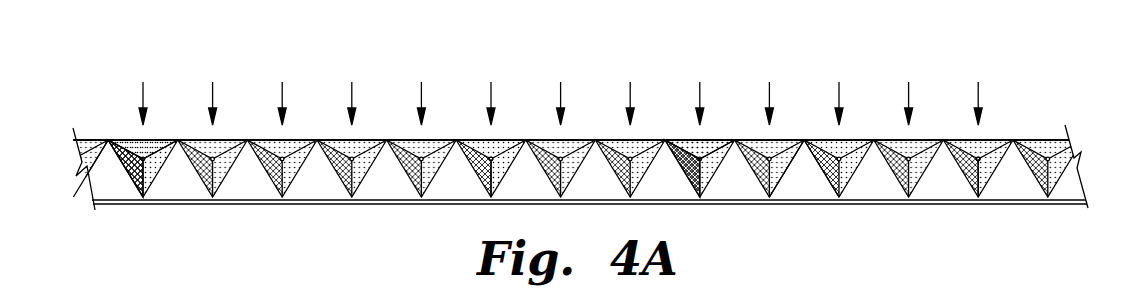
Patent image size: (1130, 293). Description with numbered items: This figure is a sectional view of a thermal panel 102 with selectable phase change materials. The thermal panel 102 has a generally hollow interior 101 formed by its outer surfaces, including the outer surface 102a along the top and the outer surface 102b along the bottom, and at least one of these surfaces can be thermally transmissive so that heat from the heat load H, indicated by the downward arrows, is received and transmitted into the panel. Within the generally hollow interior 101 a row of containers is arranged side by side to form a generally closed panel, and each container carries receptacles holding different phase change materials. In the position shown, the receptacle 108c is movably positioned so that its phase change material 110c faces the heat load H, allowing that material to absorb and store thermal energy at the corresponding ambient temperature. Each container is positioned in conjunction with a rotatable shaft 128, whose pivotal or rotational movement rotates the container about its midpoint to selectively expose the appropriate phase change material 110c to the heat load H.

The thermal panel 102 is at (103, 78).
The outer surface 102a is at (1020, 110).
The outer surface 102b is at (966, 225).
The receptacle 108c is at (156, 134).
The phase change material 110c is at (131, 143).
The rotatable shaft 128 is at (491, 156).
The generally hollow interior 101 is at (109, 204).
The heat load H is at (282, 105).